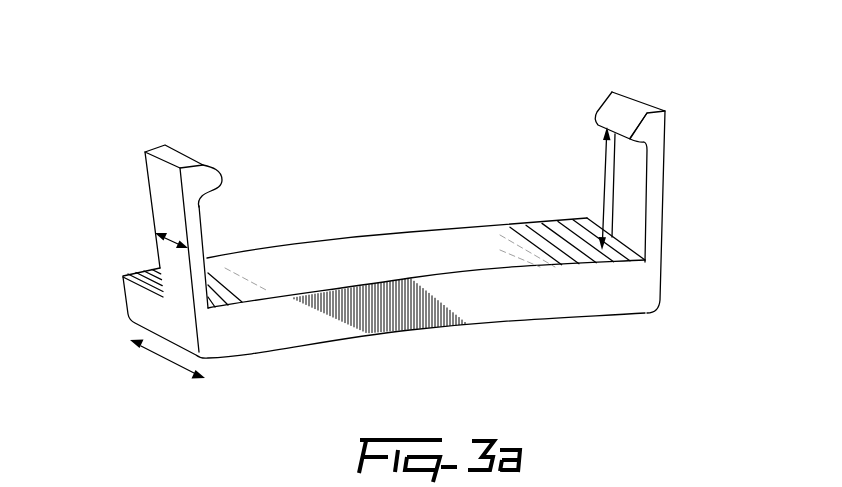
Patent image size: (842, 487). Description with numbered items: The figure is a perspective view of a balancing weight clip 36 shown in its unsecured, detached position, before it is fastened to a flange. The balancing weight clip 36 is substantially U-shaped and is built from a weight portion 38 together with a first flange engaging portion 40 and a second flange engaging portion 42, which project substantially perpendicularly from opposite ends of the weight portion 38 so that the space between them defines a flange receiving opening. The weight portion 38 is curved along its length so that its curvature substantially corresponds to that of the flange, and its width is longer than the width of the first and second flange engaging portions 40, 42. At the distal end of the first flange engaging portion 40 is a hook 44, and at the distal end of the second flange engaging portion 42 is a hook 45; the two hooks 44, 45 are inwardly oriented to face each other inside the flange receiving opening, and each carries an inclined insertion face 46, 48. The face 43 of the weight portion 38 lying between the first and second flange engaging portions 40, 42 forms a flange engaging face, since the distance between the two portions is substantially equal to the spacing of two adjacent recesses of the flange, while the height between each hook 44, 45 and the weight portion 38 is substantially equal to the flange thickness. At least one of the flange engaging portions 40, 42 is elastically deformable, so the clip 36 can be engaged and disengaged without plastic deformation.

The balancing weight clip 36 is at (459, 122).
The weight portion 38 is at (598, 292).
The first flange engaging portion 40 is at (176, 212).
The second flange engaging portion 42 is at (638, 166).
The face of the weight portion 43 is at (447, 250).
The hook 44 is at (173, 155).
The hook 45 is at (640, 96).
The inclined insertion face 46 is at (228, 160).
The inclined insertion face 48 is at (598, 98).